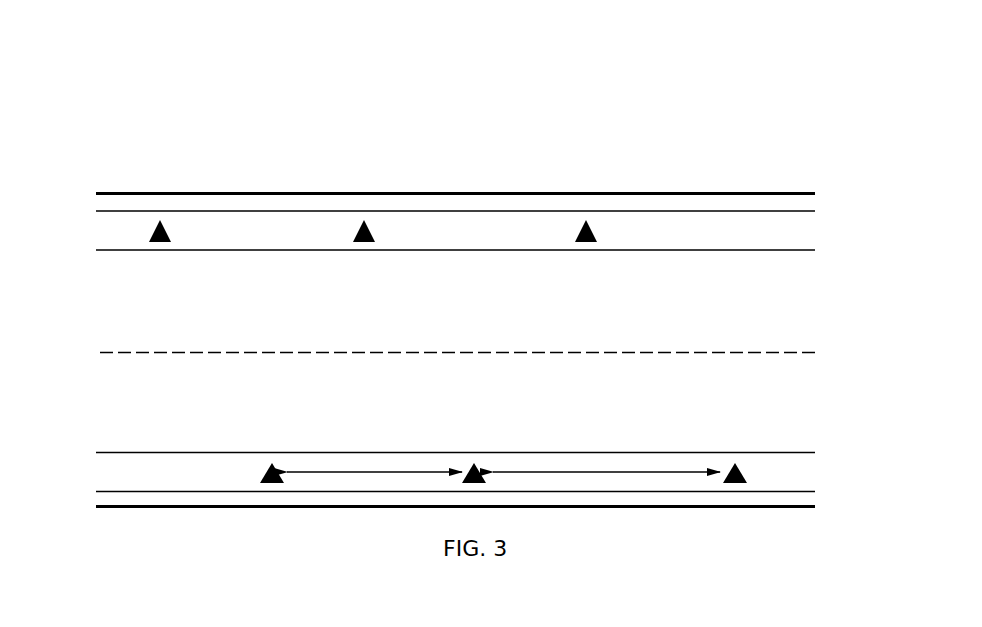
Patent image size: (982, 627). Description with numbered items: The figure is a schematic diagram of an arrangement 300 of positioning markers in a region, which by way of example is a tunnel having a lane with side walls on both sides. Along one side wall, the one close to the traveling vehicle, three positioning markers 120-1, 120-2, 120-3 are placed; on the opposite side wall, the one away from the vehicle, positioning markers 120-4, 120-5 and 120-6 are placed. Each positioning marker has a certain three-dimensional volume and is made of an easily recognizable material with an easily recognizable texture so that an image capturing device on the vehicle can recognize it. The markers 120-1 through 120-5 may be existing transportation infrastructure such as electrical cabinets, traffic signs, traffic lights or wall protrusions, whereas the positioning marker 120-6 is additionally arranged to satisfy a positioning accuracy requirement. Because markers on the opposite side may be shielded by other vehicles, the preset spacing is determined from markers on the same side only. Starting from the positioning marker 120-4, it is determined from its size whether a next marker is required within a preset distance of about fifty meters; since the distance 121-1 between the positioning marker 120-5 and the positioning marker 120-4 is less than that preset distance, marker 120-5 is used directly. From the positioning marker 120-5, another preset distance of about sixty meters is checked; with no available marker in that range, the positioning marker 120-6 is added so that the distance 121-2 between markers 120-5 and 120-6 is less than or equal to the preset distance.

The arrangement of positioning markers 300 is at (153, 132).
The positioning marker 120-1 is at (158, 207).
The positioning marker 120-2 is at (363, 207).
The positioning marker 120-3 is at (577, 207).
The positioning marker 120-4 is at (273, 462).
The positioning marker 120-5 is at (476, 462).
The positioning marker 120-6 is at (736, 462).
The distance 121-1 is at (357, 472).
The distance 121-2 is at (560, 472).